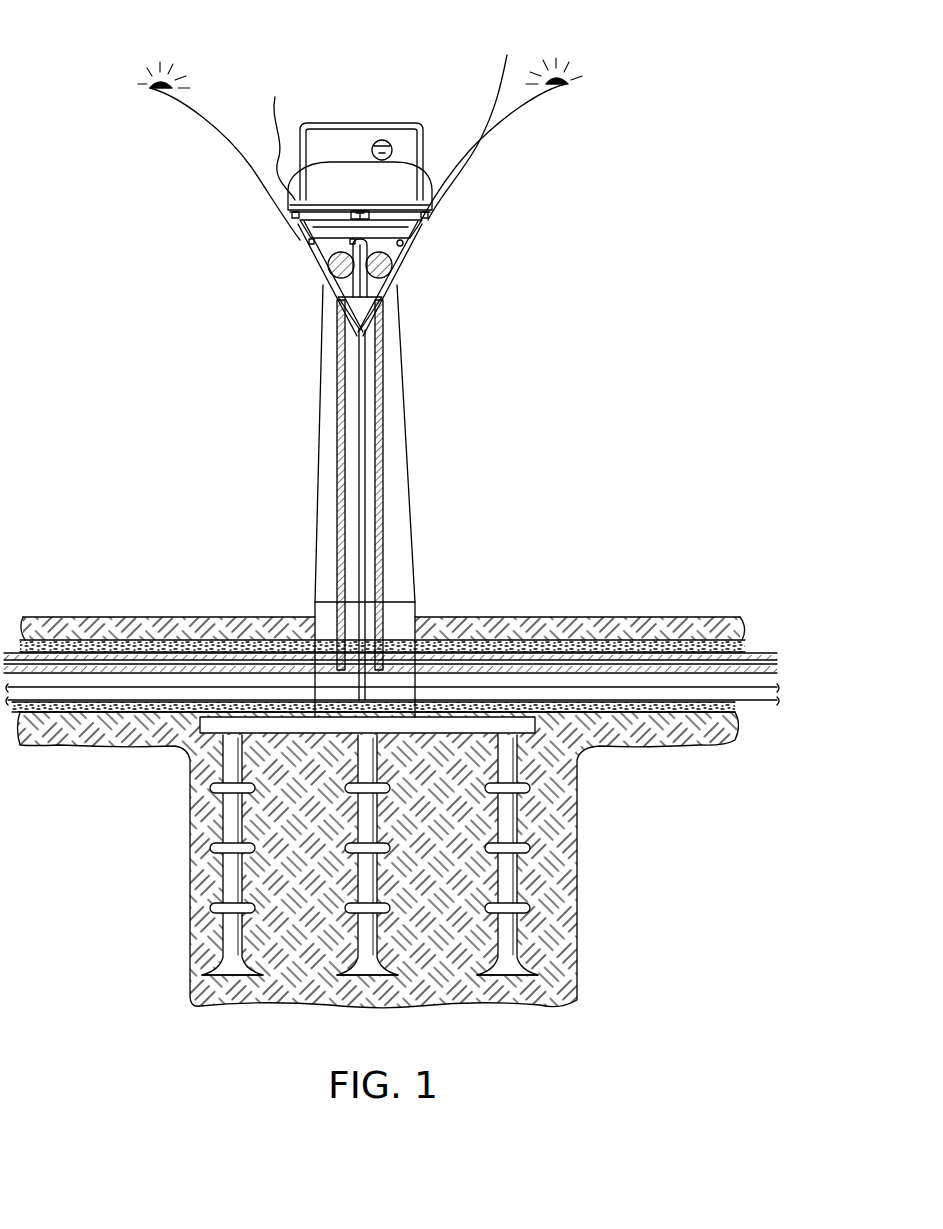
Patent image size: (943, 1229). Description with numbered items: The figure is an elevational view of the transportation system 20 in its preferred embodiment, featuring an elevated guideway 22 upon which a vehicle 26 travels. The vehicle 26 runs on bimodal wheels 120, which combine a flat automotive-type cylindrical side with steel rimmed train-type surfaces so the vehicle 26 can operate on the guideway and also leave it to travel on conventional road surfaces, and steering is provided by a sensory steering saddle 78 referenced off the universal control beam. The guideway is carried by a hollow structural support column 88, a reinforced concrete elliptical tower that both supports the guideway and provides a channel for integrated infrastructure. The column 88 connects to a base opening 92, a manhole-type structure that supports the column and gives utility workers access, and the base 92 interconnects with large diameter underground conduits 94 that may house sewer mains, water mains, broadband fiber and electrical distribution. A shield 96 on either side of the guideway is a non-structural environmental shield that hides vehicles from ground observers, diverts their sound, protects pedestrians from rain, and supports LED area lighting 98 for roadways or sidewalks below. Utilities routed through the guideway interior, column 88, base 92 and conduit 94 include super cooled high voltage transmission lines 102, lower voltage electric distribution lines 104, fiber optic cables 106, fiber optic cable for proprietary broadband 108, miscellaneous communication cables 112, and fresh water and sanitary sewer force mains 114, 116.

The transportation system 20 is at (581, 159).
The elevated guideway 22 is at (393, 263).
The vehicle 26 is at (353, 127).
The sensory steering saddle 78 is at (367, 210).
The support column 88 is at (406, 455).
The base opening 92 is at (398, 617).
The underground conduit 94 is at (597, 646).
The shield 96 is at (227, 130).
The LED area lighting 98 is at (158, 84).
The super cooled high voltage transmission lines 102 is at (313, 243).
The lower voltage electric distribution lines 104 is at (325, 262).
The fiber optic cables 106 is at (357, 295).
The fiber optic cable for proprietary broadband 108 is at (400, 247).
The miscellaneous communication cables 112 is at (402, 245).
The fresh water main 114 is at (332, 268).
The sanitary sewer force main 116 is at (397, 267).
The bimodal wheel 120 is at (385, 122).